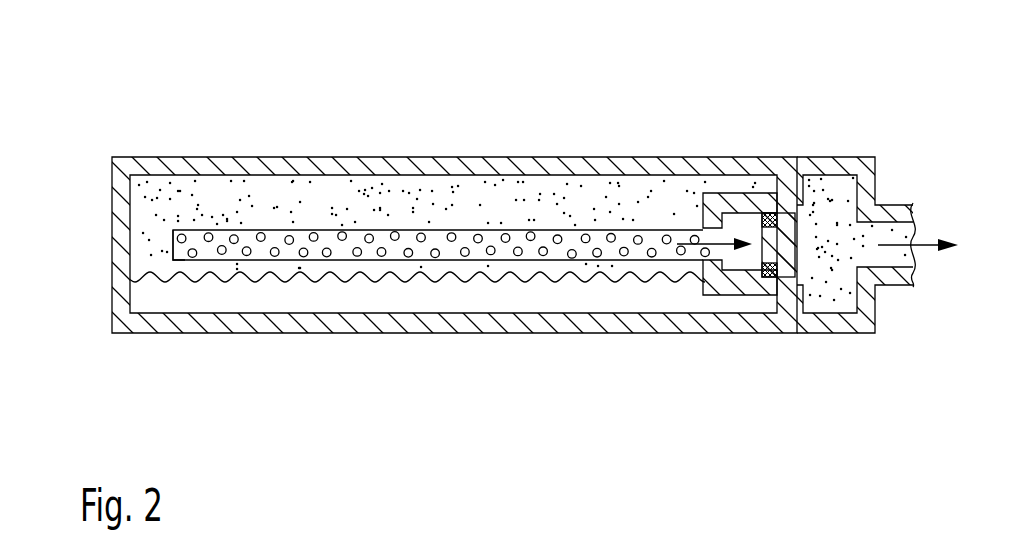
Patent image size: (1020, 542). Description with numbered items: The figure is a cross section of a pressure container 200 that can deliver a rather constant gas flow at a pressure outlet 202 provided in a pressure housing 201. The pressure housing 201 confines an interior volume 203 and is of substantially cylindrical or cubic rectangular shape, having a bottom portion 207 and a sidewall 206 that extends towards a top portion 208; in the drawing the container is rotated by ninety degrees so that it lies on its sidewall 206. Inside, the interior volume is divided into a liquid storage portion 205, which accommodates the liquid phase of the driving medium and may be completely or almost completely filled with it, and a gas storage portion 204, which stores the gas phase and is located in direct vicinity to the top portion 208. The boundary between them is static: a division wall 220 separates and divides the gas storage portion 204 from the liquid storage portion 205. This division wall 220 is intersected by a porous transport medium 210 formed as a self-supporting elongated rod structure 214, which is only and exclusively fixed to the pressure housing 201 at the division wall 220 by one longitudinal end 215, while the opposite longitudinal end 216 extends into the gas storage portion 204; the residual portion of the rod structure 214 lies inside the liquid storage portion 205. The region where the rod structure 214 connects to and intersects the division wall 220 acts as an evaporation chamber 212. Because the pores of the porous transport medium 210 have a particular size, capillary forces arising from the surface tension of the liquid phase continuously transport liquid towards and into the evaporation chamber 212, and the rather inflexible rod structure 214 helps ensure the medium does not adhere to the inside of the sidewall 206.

The pressure container 200 is at (397, 99).
The pressure housing 201 is at (540, 167).
The pressure outlet 202 is at (928, 294).
The interior volume 203 is at (225, 293).
The gas storage portion 204 is at (832, 207).
The liquid storage portion 205 is at (350, 285).
The sidewall 206 is at (410, 321).
The bottom portion 207 is at (121, 240).
The top portion 208 is at (867, 178).
The porous transport medium 210 is at (440, 240).
The evaporation chamber 212 is at (747, 228).
The elongated rod structure 214 is at (322, 230).
The longitudinal end 215 is at (697, 226).
The opposite longitudinal end 216 is at (184, 230).
The division wall 220 is at (740, 285).